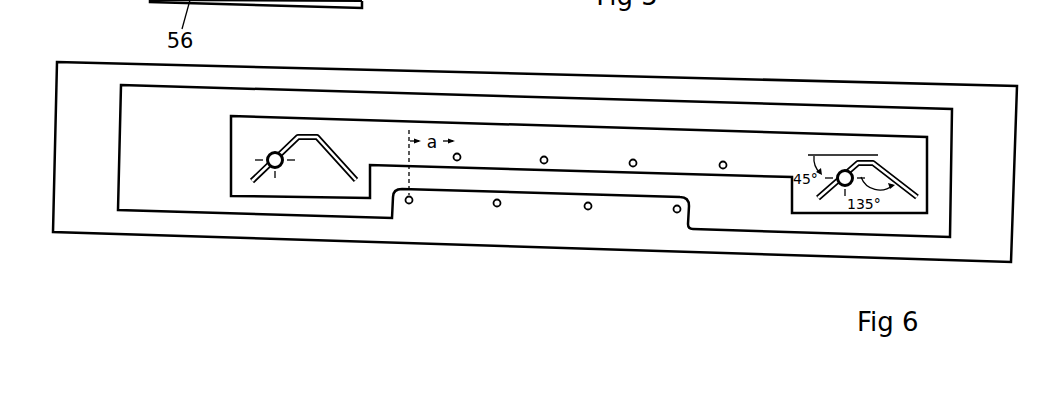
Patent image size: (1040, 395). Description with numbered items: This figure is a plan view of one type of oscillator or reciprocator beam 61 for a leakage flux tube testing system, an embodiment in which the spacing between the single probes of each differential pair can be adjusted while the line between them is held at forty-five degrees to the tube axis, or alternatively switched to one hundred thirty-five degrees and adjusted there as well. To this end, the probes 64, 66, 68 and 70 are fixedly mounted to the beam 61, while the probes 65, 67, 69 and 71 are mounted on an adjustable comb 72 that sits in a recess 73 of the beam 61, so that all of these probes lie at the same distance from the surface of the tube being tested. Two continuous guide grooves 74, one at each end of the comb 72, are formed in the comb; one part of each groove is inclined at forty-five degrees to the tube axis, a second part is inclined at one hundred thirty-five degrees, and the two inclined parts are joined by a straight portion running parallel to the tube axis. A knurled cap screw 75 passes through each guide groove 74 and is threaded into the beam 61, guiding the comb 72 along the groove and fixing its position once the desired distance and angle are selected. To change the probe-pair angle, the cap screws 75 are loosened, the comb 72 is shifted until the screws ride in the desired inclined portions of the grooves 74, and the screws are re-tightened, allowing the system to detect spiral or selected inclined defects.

The oscillator beam 61 is at (140, 223).
The probe 64 is at (410, 205).
The probe 65 is at (460, 152).
The probe 66 is at (498, 208).
The probe 67 is at (547, 155).
The probe 68 is at (590, 211).
The probe 69 is at (636, 158).
The probe 70 is at (677, 214).
The probe 71 is at (726, 160).
The adjustable comb 72 is at (298, 178).
The recess 73 is at (383, 207).
The guide groove 74 is at (346, 164).
The knurled cap screw 75 is at (278, 151).